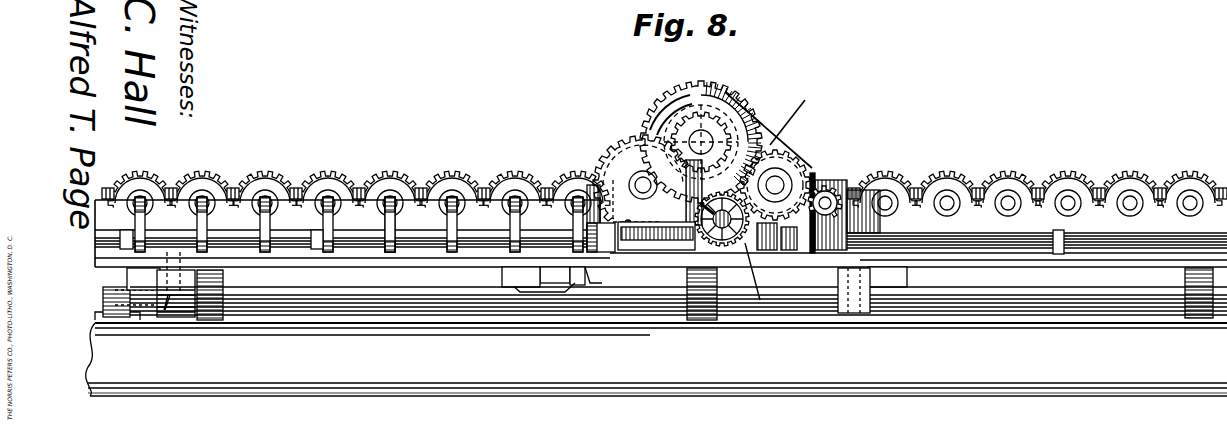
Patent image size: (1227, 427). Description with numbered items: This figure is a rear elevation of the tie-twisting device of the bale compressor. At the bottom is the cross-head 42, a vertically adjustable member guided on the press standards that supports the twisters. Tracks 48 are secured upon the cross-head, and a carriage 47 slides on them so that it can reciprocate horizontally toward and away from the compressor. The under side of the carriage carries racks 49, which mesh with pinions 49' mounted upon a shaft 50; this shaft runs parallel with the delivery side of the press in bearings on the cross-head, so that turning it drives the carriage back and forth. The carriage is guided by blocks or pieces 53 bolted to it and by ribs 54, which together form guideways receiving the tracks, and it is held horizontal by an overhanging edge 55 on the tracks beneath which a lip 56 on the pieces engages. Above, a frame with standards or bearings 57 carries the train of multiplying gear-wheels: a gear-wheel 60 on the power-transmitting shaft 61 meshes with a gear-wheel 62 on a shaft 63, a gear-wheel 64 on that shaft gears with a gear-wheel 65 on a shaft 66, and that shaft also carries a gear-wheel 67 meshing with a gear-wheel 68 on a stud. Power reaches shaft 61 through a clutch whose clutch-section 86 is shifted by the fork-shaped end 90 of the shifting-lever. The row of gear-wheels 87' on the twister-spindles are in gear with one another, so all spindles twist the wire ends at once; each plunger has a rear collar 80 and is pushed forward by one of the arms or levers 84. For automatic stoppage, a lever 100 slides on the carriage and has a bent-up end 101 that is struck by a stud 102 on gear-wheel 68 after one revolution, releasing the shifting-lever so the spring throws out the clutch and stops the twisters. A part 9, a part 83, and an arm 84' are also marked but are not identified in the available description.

The frame 9 is at (623, 204).
The cross-head 42 is at (656, 359).
The carriage 47 is at (390, 262).
The tracks 48 is at (140, 330).
The racks 49 is at (678, 288).
The pinions 49' is at (705, 315).
The shaft 50 is at (480, 325).
The blocks or pieces 53 is at (190, 318).
The ribs 54 is at (105, 290).
The overhanging edge 55 is at (143, 279).
The lip 56 is at (168, 317).
The standards or bearings 57 is at (686, 190).
The gear-wheel 60 is at (710, 219).
The power-transmitting shaft 61 is at (768, 271).
The gear-wheel 62 is at (772, 160).
The shaft 63 is at (787, 182).
The gear-wheel 64 is at (778, 183).
The gear-wheel 65 is at (723, 86).
The shaft 66 is at (658, 128).
The gear-wheel 67 is at (662, 128).
The gear-wheel 68 is at (620, 153).
The collar 80 is at (292, 200).
The bar 83 is at (228, 240).
The arms or levers 84 is at (341, 224).
The stud 84' is at (373, 224).
The clutch-section 86 is at (681, 192).
The gear-wheels 87' is at (664, 179).
The fork-shaped end 90 is at (818, 213).
The lever 100 is at (656, 244).
The bent-up end 101 is at (608, 244).
The stud 102 is at (668, 215).